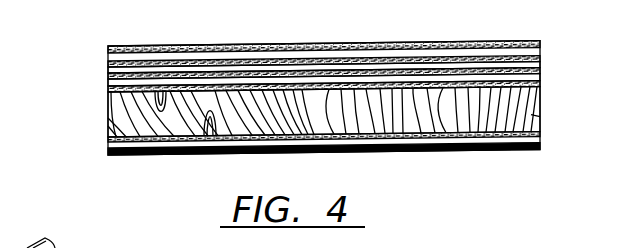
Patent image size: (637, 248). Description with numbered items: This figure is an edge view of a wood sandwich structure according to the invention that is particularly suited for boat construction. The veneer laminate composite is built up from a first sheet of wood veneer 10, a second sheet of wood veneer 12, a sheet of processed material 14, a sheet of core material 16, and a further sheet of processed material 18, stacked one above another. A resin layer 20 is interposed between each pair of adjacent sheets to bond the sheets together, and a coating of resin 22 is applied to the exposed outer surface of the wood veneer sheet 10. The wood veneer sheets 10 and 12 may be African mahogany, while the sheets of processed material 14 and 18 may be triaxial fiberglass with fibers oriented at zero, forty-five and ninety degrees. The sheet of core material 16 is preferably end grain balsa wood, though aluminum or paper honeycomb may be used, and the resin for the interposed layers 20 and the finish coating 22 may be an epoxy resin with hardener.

The first sheet of wood veneer 10 is at (540, 43).
The second sheet of wood veneer 12 is at (532, 64).
The sheet of processed material 14 is at (533, 77).
The sheet of core material 16 is at (532, 122).
The further sheet of processed material 18 is at (513, 143).
The resin layer 20 is at (108, 139).
The coating of resin 22 is at (195, 45).